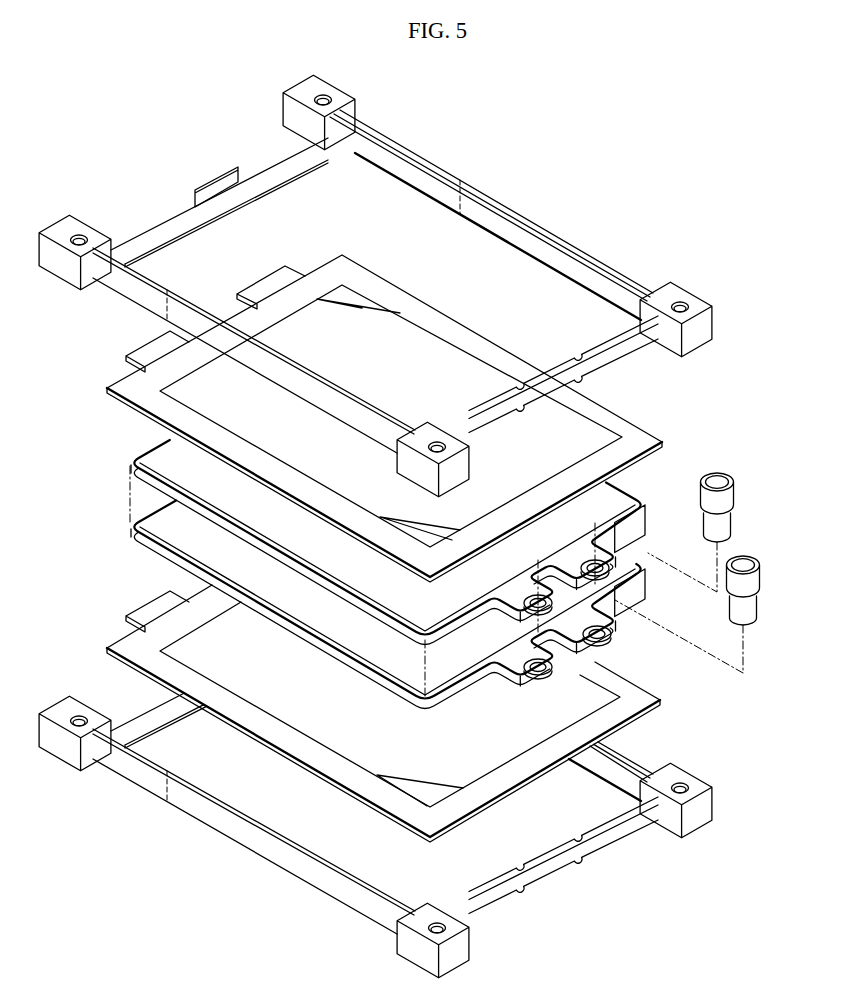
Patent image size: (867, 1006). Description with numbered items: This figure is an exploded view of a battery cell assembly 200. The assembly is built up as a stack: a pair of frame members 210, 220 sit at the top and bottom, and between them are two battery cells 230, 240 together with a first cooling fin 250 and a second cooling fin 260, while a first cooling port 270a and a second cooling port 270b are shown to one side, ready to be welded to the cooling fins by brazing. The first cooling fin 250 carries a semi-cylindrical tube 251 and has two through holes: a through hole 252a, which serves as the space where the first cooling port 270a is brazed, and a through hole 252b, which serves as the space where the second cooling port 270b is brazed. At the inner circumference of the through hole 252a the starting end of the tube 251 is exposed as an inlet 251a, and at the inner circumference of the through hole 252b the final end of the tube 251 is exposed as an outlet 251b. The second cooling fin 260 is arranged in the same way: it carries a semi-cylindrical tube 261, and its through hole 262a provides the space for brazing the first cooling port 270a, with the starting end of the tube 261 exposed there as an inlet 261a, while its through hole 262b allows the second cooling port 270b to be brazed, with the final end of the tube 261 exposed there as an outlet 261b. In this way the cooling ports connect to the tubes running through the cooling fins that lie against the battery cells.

The battery cell assembly 200 is at (512, 167).
The frame member 210 is at (708, 326).
The frame member 220 is at (708, 806).
The battery cell 230 is at (475, 371).
The battery cell 240 is at (197, 653).
The first cooling fin 250 is at (203, 463).
The tube 251 is at (130, 463).
The inlet 251a is at (567, 578).
The outlet 251b is at (574, 558).
The through hole 252a is at (539, 612).
The through hole 252b is at (632, 585).
The second cooling fin 260 is at (192, 537).
The tube 261 is at (130, 527).
The inlet 261a is at (532, 672).
The outlet 261b is at (611, 641).
The through hole 262a is at (544, 682).
The through hole 262b is at (620, 659).
The first cooling port 270a is at (760, 583).
The second cooling port 270b is at (733, 497).